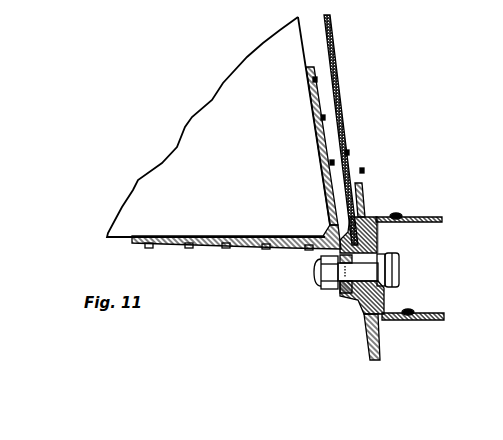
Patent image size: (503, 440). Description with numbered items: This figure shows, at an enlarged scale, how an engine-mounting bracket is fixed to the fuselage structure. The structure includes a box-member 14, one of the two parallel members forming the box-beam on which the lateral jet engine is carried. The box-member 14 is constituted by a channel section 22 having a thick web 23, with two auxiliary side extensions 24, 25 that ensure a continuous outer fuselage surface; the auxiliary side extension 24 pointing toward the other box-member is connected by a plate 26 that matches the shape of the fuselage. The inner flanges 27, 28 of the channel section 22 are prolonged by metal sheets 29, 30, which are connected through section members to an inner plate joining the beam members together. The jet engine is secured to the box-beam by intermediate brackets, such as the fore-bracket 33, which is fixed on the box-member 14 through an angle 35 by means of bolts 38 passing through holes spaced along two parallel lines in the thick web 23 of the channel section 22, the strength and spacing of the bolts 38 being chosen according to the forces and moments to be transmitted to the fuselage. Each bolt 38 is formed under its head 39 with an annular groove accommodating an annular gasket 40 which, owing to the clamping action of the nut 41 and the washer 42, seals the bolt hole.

The box-member 14 is at (434, 285).
The channel section 22 is at (378, 234).
The thick web 23 is at (385, 293).
The auxiliary side extension 24 is at (360, 178).
The auxiliary side extension 25 is at (380, 341).
The plate 26 is at (341, 94).
The inner flange 27 is at (409, 207).
The inner flange 28 is at (416, 320).
The metal sheet 29 is at (430, 217).
The metal sheet 30 is at (428, 312).
The fore-bracket 33 is at (269, 61).
The angle 35 is at (328, 236).
The bolt 38 is at (353, 297).
The head 39 is at (399, 261).
The annular gasket 40 is at (359, 306).
The nut 41 is at (321, 274).
The washer 42 is at (332, 290).